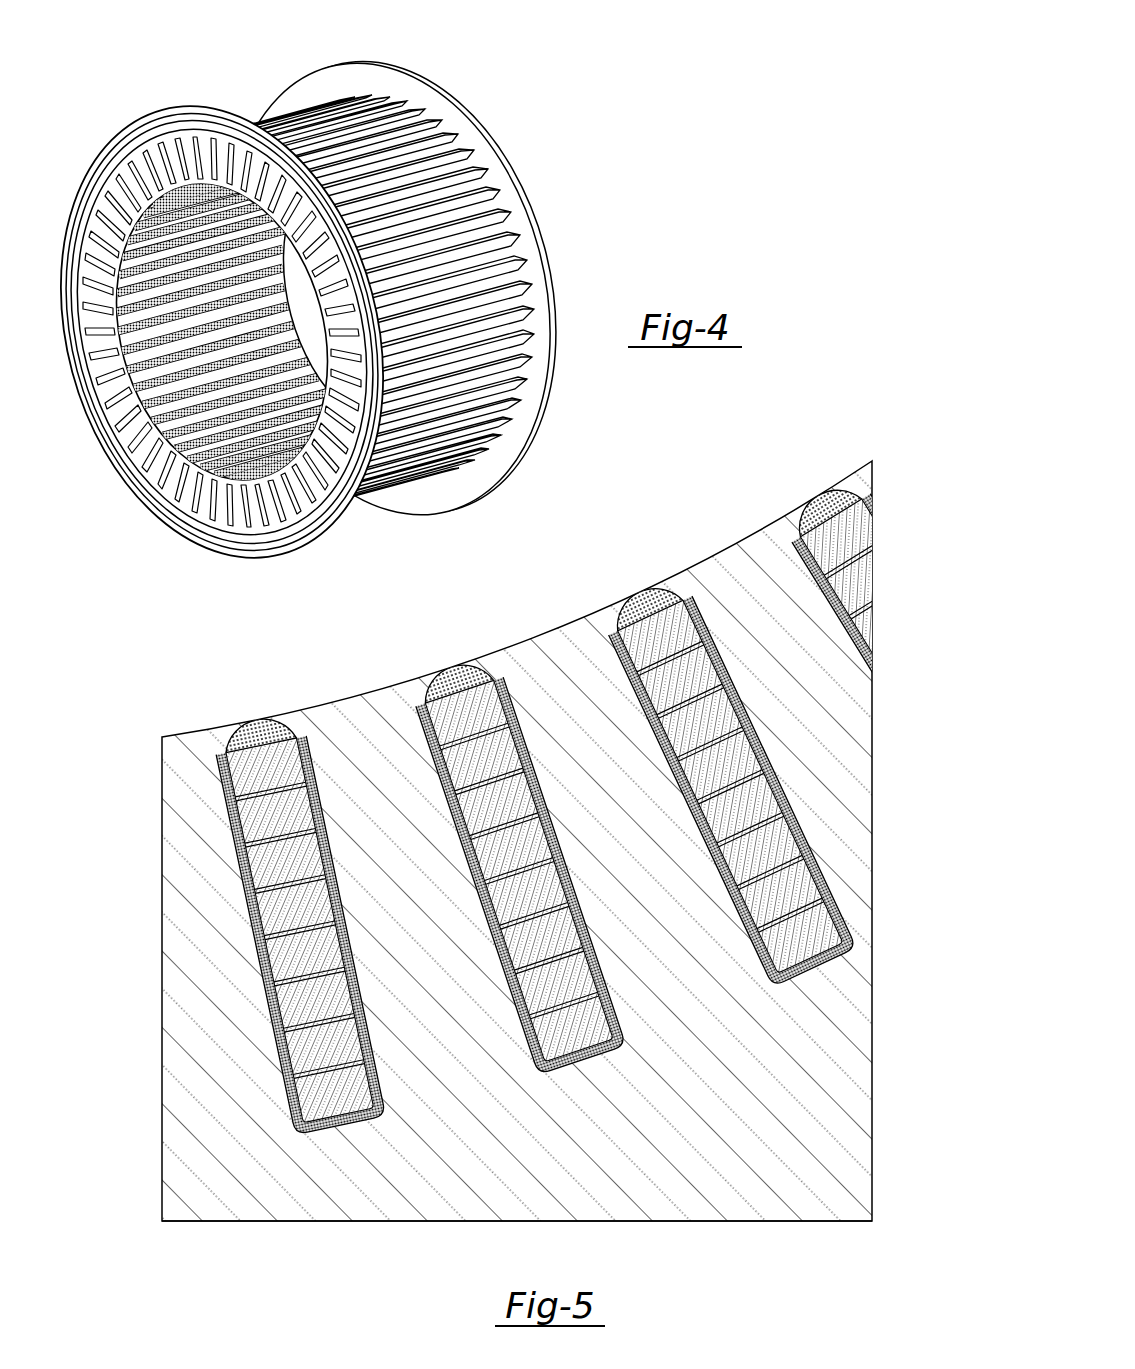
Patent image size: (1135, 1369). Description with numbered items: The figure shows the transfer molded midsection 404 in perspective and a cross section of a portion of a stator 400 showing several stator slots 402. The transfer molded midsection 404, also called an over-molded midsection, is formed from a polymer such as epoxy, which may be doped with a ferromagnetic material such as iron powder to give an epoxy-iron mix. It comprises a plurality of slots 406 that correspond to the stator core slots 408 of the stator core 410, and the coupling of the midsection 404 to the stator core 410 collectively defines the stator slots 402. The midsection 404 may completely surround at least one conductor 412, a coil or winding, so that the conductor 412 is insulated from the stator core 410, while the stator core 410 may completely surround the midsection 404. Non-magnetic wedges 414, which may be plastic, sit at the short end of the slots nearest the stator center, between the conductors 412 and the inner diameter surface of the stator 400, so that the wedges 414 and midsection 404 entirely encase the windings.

In FIG. 5, the stator 400 is at (153, 632).
In FIG. 5, the stator slots 402 is at (382, 1128).
In FIG. 4, the transfer molded midsection 404 is at (126, 40).
In FIG. 5, the transfer molded midsection 404 is at (278, 1047).
In FIG. 4, the slots 406 is at (482, 286).
In FIG. 5, the slots 406 is at (334, 1116).
In FIG. 5, the stator core slots 408 is at (213, 795).
In FIG. 5, the stator core 410 is at (376, 1196).
In FIG. 5, the conductor 412 is at (527, 850).
In FIG. 4, the non-magnetic wedges 414 is at (170, 322).
In FIG. 5, the non-magnetic wedges 414 is at (640, 606).